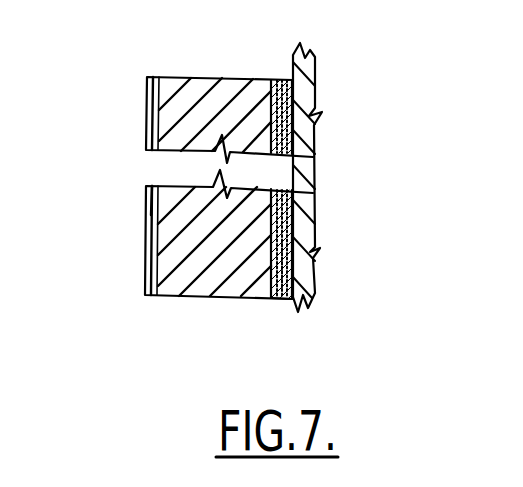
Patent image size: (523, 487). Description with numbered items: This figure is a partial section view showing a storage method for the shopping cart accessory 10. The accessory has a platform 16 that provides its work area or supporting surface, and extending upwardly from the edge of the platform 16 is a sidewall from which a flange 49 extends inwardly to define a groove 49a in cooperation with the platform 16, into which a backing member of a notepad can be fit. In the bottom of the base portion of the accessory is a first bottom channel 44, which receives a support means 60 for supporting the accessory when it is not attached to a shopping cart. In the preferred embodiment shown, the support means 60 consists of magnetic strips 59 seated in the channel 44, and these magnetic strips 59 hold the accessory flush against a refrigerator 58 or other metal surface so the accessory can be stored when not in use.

The shopping cart accessory 10 is at (198, 300).
The platform 16 is at (149, 125).
The first bottom channel 44 is at (290, 78).
The flange 49 is at (148, 250).
The groove 49a is at (153, 192).
The refrigerator 58 is at (311, 150).
The magnetic strips 59 is at (284, 266).
The support means 60 is at (279, 302).